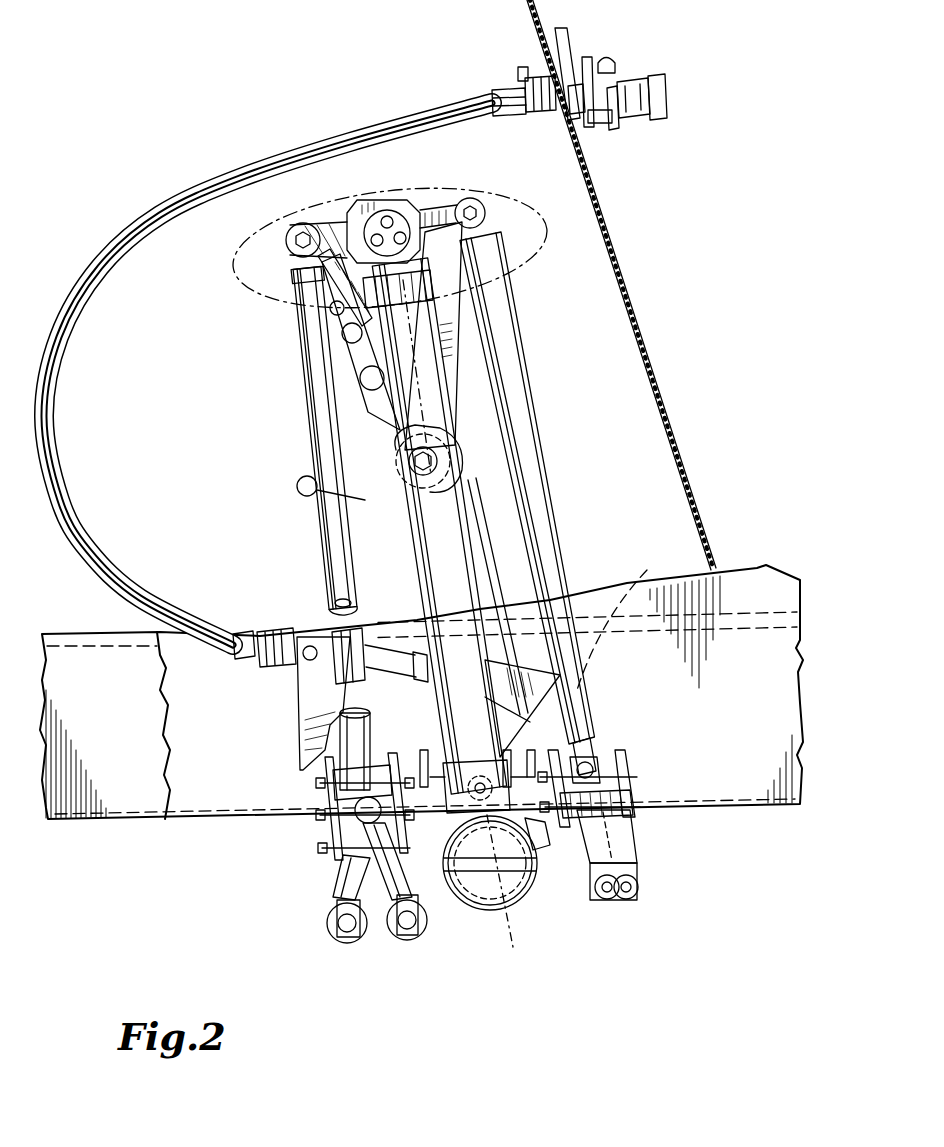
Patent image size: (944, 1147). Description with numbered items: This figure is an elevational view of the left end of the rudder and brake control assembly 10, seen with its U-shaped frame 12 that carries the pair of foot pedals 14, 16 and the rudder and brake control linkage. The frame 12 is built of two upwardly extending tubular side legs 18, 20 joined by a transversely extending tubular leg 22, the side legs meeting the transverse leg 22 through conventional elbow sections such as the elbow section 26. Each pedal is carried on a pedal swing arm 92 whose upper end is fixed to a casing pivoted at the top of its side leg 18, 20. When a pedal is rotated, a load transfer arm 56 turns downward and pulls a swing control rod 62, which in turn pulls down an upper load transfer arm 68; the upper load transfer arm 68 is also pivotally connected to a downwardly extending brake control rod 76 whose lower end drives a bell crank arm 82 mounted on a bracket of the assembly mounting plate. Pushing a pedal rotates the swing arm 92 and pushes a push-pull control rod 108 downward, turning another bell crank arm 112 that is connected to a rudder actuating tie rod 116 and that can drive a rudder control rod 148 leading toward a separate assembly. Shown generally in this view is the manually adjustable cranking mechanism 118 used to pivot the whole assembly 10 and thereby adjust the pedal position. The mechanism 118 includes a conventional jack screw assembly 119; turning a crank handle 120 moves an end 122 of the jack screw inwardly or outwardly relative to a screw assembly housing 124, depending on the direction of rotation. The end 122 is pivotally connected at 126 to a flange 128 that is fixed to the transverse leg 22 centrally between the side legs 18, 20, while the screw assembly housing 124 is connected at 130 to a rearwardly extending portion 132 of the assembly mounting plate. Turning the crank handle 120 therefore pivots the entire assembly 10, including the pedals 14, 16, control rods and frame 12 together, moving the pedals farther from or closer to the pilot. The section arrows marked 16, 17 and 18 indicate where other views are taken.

The rudder and brake control assembly 10 is at (612, 356).
The frame 12 is at (470, 553).
The foot pedal 14 is at (330, 310).
The foot pedal 16 is at (252, 590).
The section line 17 / roller bracket 17 is at (280, 724).
The side leg 18 is at (633, 730).
The side leg 20 is at (450, 517).
The transverse leg 22 is at (490, 898).
The elbow section 26 is at (477, 910).
The load transfer arm 56 is at (360, 455).
The swing control rod 62 is at (307, 428).
The upper load transfer arm 68 is at (350, 207).
The brake control rod 76 is at (310, 340).
The bell crank arm 82 is at (340, 877).
The pedal swing arm 92 is at (443, 317).
The push-pull control rod 108 is at (509, 367).
The bell crank arm 112 is at (617, 840).
The rudder actuating tie rod 116 is at (607, 900).
The manually adjustable cranking mechanism 118 is at (363, 130).
The jack screw assembly 119 is at (359, 628).
The crank handle 120 is at (629, 83).
The end of jack screw assembly 122 is at (508, 673).
The screw assembly housing 124 is at (300, 687).
The pivotal connection 126 is at (627, 620).
The flange 128 is at (545, 825).
The connection 130 is at (310, 650).
The rearwardly extending portion 132 is at (303, 753).
The rudder control rod 148 is at (625, 900).